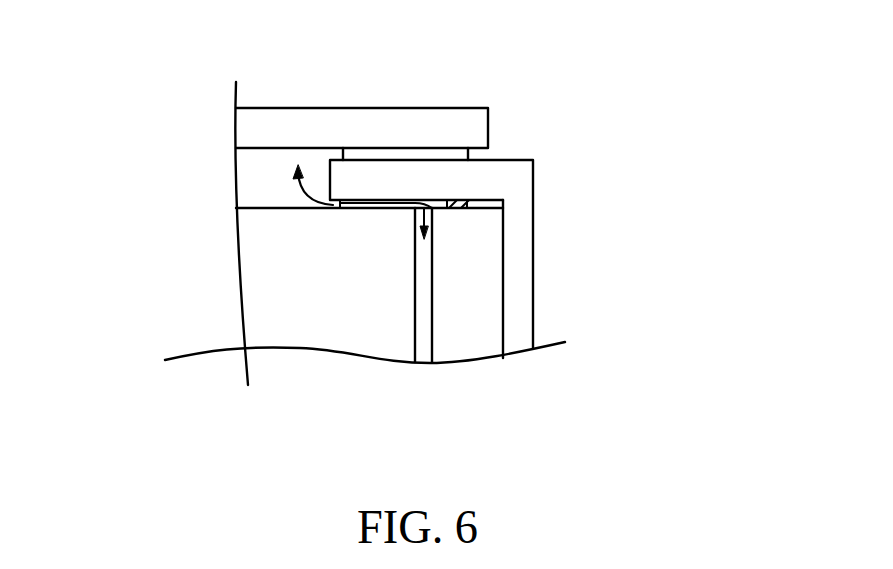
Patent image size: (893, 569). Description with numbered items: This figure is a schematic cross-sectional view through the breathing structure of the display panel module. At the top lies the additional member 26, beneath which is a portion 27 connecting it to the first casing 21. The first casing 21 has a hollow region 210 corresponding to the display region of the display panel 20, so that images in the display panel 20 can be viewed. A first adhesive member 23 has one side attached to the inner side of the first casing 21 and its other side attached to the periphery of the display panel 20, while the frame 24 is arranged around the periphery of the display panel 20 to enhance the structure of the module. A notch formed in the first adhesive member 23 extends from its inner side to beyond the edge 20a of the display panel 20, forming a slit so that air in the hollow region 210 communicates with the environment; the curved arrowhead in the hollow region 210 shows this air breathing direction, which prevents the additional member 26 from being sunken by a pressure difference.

The display panel 20 is at (283, 287).
The edge of the display panel 20a is at (420, 363).
The first casing 21 is at (517, 181).
The first adhesive member 23 is at (503, 206).
The frame 24 is at (468, 333).
The additional member 26 is at (333, 125).
The connecting portion 27 is at (403, 152).
The hollow region 210 is at (270, 175).